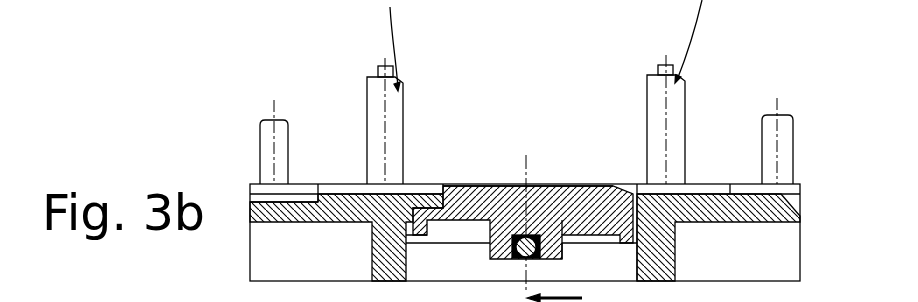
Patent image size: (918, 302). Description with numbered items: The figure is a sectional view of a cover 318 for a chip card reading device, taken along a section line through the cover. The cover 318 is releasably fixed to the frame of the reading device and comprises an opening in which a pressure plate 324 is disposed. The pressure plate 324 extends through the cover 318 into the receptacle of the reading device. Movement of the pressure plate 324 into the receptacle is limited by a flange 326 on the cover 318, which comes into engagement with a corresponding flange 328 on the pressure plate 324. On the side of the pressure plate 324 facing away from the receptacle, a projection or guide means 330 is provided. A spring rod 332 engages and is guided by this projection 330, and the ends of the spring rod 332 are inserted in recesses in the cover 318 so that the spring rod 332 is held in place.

The cover 318 is at (253, 94).
The pressure plate 324 is at (572, 193).
The flange 326 is at (420, 198).
The flange 328 is at (440, 200).
The projection 330 is at (551, 196).
The spring rod 332 is at (520, 233).